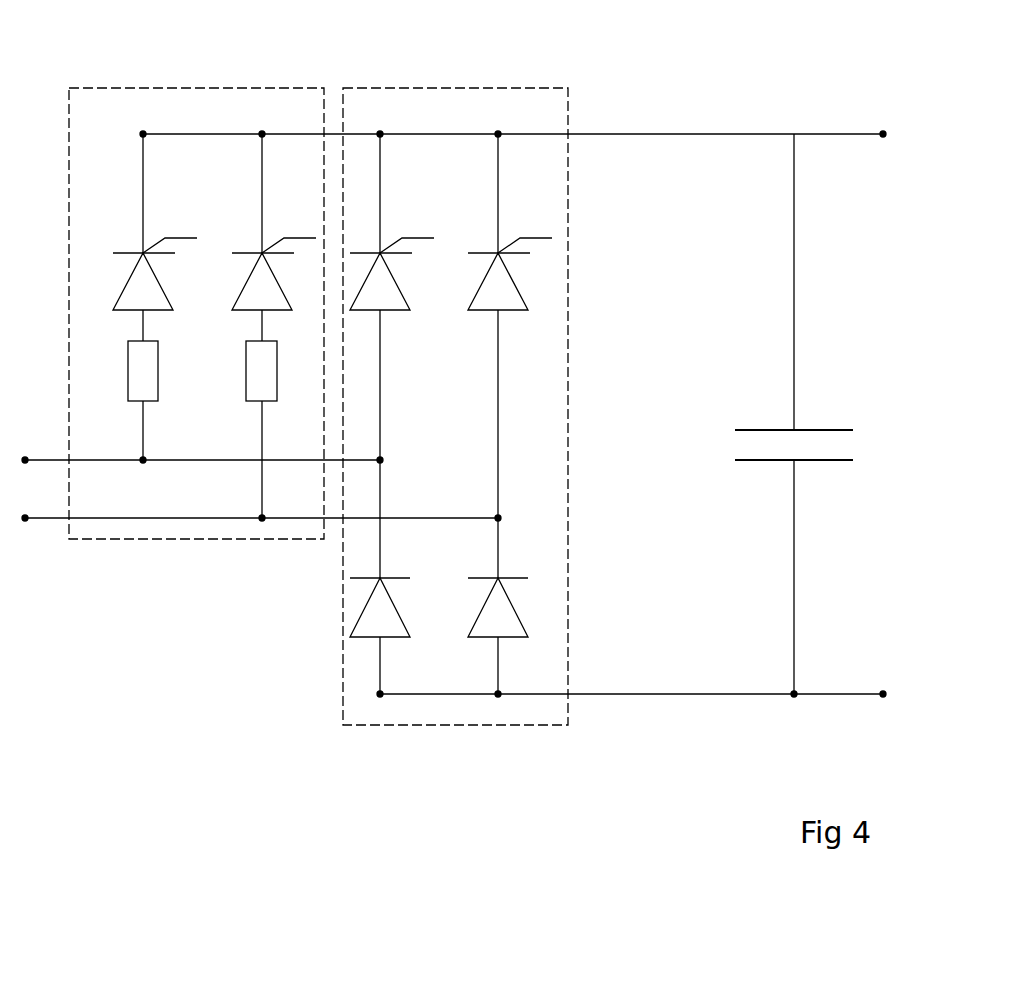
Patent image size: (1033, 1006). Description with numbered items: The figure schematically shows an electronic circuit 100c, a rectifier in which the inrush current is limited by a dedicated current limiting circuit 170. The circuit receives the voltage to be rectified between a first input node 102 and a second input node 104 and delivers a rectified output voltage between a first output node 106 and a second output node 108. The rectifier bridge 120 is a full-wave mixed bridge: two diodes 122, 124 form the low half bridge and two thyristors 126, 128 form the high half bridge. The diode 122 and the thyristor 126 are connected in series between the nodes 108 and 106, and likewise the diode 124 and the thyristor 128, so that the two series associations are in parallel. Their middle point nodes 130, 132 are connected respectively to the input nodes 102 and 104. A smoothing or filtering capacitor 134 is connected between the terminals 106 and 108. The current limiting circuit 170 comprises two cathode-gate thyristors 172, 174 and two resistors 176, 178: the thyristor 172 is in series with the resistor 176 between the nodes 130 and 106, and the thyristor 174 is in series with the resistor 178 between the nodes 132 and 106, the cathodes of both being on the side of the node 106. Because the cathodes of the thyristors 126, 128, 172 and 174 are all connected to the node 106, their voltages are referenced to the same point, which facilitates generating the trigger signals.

The electronic circuit 100c is at (712, 58).
The first input node 102 is at (24, 456).
The second input node 104 is at (26, 522).
The first output node 106 is at (883, 134).
The second output node 108 is at (883, 694).
The rectifier bridge 120 is at (442, 88).
The diode 122 is at (363, 613).
The diode 124 is at (520, 620).
The thyristor 126 is at (404, 298).
The thyristor 128 is at (522, 298).
The middle point node 130 is at (386, 460).
The middle point node 132 is at (503, 518).
The smoothing capacitor 134 is at (818, 430).
The current limiting circuit 170 is at (192, 88).
The cathode-gate thyristor 172 is at (128, 290).
The cathode-gate thyristor 174 is at (282, 298).
The resistor 176 is at (128, 388).
The resistor 178 is at (246, 388).